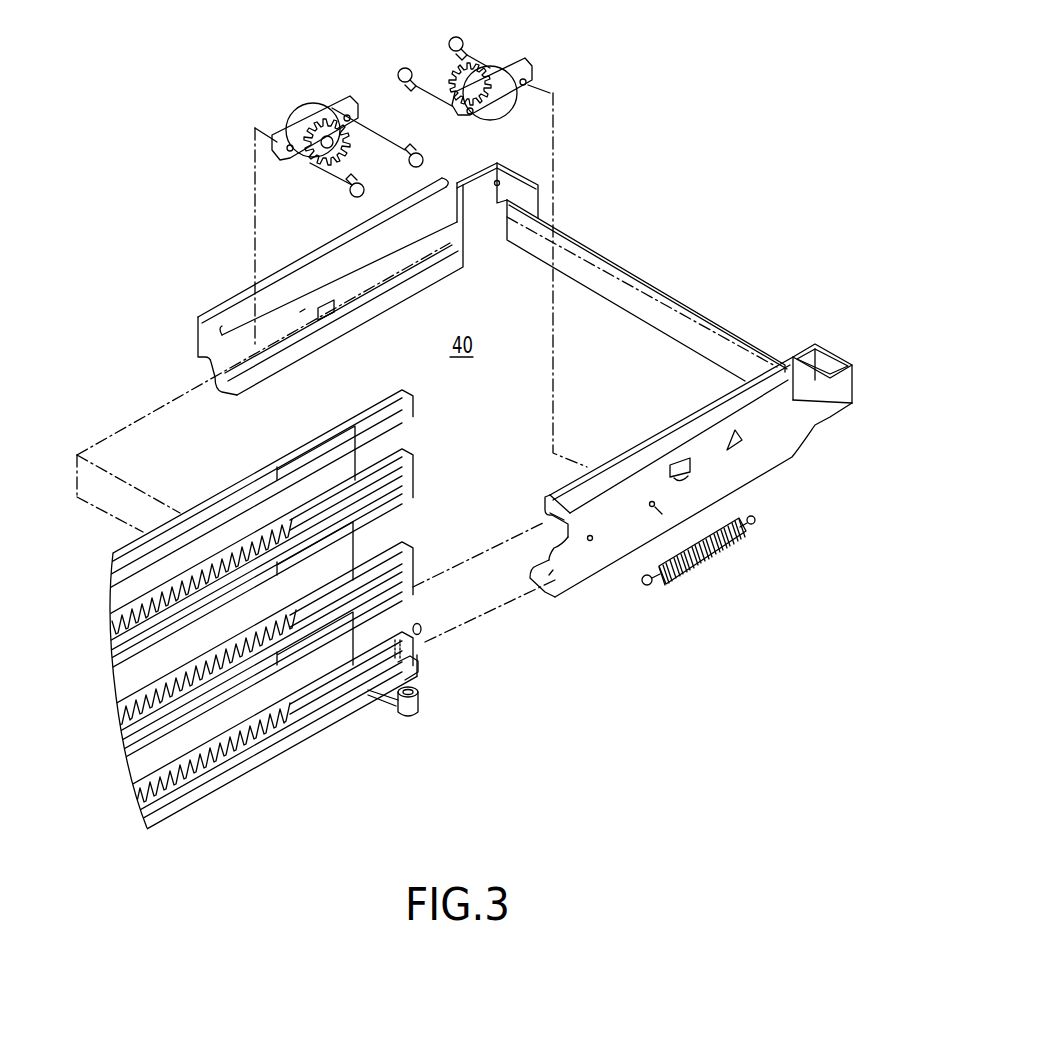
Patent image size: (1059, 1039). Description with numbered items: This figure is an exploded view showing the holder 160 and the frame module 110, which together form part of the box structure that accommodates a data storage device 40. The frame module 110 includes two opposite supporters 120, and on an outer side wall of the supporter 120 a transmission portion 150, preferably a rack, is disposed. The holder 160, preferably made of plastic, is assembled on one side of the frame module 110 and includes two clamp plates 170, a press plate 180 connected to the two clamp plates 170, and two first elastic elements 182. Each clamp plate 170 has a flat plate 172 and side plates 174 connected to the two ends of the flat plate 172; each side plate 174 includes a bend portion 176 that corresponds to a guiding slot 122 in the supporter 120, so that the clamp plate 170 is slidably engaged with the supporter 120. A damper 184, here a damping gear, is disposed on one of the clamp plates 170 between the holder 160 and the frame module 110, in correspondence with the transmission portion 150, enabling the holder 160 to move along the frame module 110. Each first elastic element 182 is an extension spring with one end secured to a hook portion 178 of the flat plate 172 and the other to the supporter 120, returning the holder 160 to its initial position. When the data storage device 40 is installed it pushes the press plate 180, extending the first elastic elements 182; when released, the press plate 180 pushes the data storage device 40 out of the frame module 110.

The data storage device 40 is at (368, 279).
The frame module 110 is at (212, 800).
The supporter 120 is at (307, 677).
The guiding slot 122 is at (418, 582).
The transmission portion 150 is at (250, 744).
The holder 160 is at (788, 260).
The clamp plate 170 is at (757, 425).
The flat plate 172 is at (577, 570).
The side plate 174 is at (567, 497).
The bend portion 176 is at (543, 555).
The hook portion 178 is at (690, 477).
The press plate 180 is at (643, 303).
The first elastic element 182 is at (733, 540).
The damper 184 is at (315, 110).